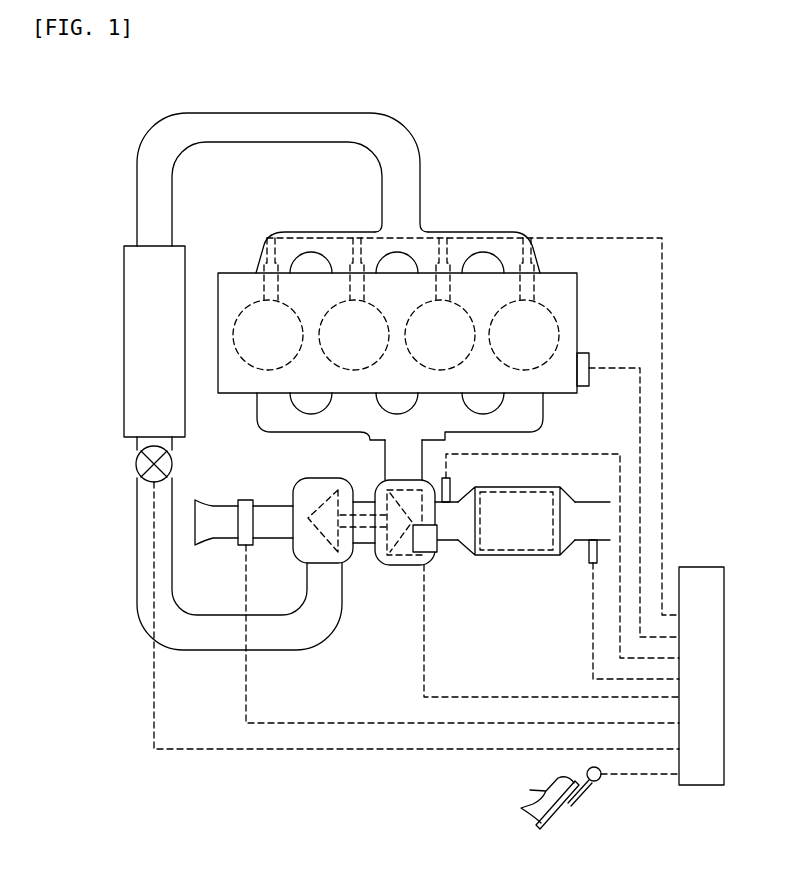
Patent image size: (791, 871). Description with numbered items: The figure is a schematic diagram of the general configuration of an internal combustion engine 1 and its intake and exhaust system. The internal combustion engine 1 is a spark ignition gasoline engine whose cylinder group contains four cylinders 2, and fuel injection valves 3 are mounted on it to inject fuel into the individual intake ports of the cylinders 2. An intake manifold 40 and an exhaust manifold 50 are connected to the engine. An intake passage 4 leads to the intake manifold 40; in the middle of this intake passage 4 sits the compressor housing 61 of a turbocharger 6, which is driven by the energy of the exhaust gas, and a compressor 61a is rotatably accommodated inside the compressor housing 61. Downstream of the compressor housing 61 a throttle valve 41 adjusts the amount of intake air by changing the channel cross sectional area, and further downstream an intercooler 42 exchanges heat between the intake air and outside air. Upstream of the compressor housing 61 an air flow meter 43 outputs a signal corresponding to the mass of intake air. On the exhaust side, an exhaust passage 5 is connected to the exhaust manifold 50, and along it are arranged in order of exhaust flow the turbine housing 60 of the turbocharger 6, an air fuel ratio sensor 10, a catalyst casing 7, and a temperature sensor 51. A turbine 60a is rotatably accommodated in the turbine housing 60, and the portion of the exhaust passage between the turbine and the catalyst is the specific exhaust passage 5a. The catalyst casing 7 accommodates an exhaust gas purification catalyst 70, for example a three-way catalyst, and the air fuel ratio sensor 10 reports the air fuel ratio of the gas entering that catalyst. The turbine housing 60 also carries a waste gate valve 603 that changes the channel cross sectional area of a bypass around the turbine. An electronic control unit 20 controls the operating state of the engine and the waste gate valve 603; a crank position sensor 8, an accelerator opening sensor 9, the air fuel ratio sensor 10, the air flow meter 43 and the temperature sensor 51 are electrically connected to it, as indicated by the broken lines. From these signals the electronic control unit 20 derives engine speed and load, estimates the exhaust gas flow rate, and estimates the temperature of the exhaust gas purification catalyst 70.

The internal combustion engine 1 is at (576, 273).
The cylinders 2 is at (548, 308).
The fuel injection valves 3 is at (265, 277).
The intake passage 4 is at (280, 113).
The exhaust passage 5 is at (424, 456).
The specific exhaust passage 5a is at (446, 541).
The turbocharger 6 is at (362, 566).
The catalyst casing 7 is at (540, 487).
The crank position sensor 8 is at (589, 353).
The accelerator opening sensor 9 is at (600, 780).
The air fuel ratio sensor 10 is at (450, 478).
The electronic control unit (ECU) 20 is at (695, 567).
The intake manifold 40 is at (316, 232).
The throttle valve 41 is at (172, 462).
The intercooler 42 is at (185, 246).
The air flow meter 43 is at (240, 500).
The exhaust manifold 50 is at (543, 415).
The temperature sensor 51 is at (590, 563).
The turbine housing 60 is at (385, 484).
The turbine 60a is at (398, 535).
The compressor housing 61 is at (318, 478).
The compressor 61a is at (324, 504).
The exhaust gas purification catalyst 70 is at (530, 555).
The waste gate valve 603 is at (430, 552).